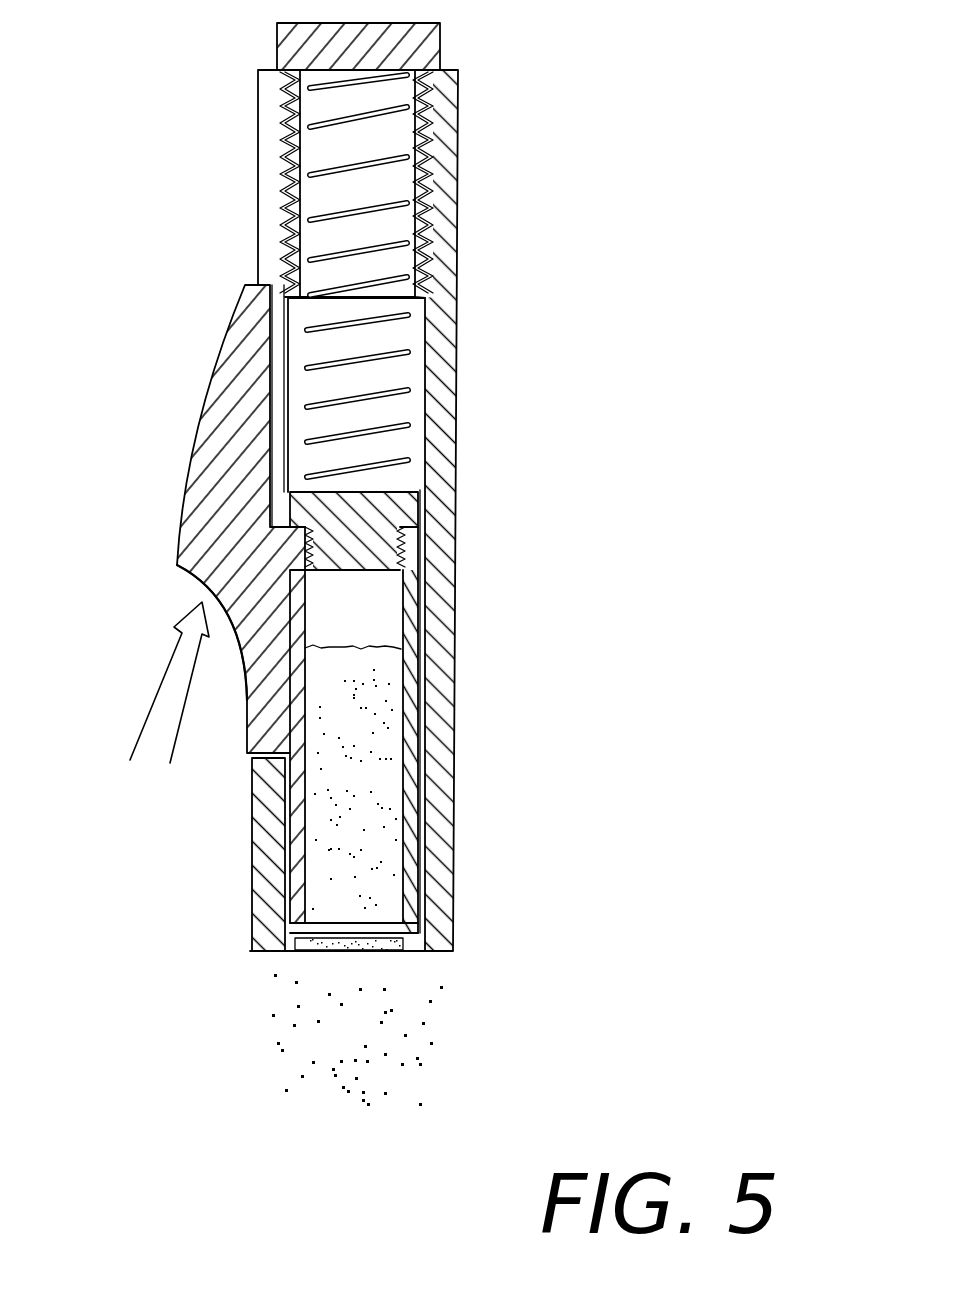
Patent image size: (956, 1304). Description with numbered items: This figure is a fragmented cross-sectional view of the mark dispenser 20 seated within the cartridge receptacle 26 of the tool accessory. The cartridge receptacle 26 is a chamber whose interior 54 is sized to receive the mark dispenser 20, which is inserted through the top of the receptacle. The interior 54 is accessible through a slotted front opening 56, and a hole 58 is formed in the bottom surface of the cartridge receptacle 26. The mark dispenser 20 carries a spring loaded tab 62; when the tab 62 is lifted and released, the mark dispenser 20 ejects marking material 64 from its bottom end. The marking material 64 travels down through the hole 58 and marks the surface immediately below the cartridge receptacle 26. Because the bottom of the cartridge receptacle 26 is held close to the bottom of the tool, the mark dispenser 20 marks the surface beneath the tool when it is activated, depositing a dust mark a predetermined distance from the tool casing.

The mark dispenser 20 is at (218, 368).
The cartridge receptacle 26 is at (455, 370).
The interior 54 is at (385, 230).
The slotted front opening 56 is at (268, 167).
The hole 58 is at (312, 940).
The spring loaded tab 62 is at (218, 527).
The marking material 64 is at (373, 1037).